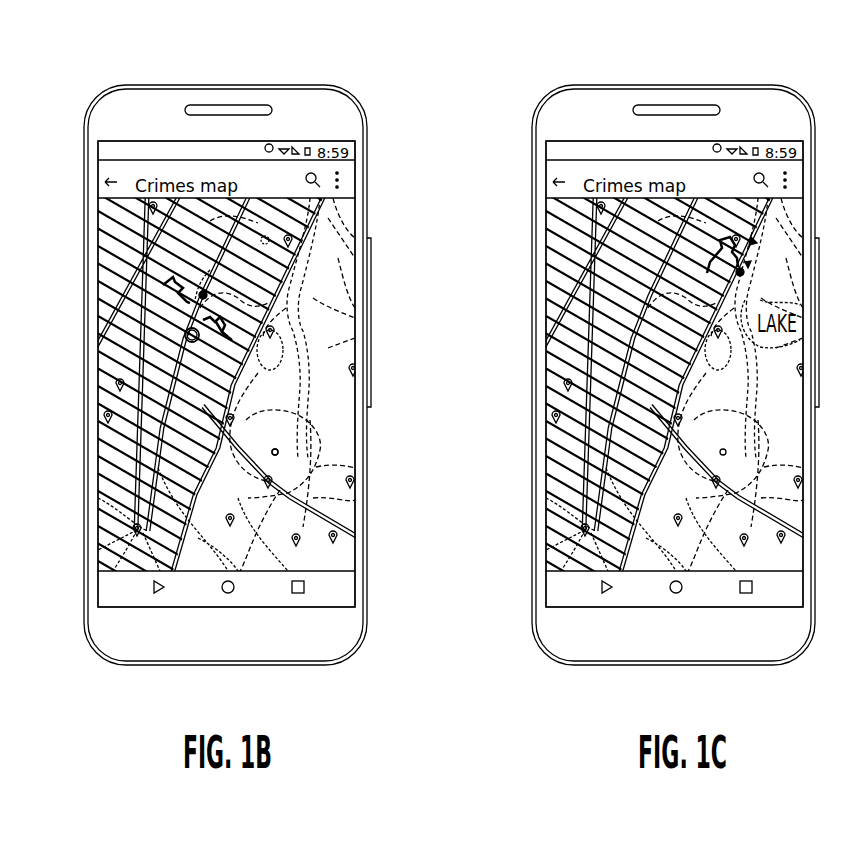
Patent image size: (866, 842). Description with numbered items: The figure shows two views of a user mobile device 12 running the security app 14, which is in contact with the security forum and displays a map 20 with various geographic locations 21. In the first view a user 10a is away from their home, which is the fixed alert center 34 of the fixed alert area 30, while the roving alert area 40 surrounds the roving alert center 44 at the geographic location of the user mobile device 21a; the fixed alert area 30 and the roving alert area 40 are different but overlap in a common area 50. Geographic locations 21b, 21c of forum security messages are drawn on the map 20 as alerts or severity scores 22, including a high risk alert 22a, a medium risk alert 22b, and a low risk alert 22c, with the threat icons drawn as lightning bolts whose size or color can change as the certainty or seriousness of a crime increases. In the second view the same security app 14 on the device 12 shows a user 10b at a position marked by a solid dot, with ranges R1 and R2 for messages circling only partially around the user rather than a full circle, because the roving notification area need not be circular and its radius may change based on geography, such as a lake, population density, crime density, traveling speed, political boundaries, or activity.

In FIG. 1B, the user 10a is at (335, 390).
In FIG. 1B, the user 10b is at (268, 241).
In FIG. 1B, the user mobile device 12 is at (277, 85).
In FIG. 1C, the user mobile device 12 is at (762, 85).
In FIG. 1B, the security app 14 is at (383, 212).
In FIG. 1C, the security app 14 is at (803, 318).
In FIG. 1B, the map 20 is at (186, 165).
In FIG. 1C, the map 20 is at (551, 232).
In FIG. 1B, the geographic locations 21 is at (335, 390).
In FIG. 1B, the geographic location of user mobile device 21a is at (193, 343).
In FIG. 1B, the geographic location 21b is at (351, 330).
In FIG. 1C, the geographic location 21b is at (592, 248).
In FIG. 1B, the geographic location of forum security message 21c is at (228, 338).
In FIG. 1C, the geographic location of forum security message 21c is at (592, 248).
In FIG. 1C, the severity score 22 is at (718, 241).
In FIG. 1B, the high risk alert 22a is at (163, 285).
In FIG. 1B, the medium risk alert 22b is at (232, 340).
In FIG. 1B, the low risk alert 22c is at (351, 330).
In FIG. 1B, the fixed alert area 30 is at (210, 270).
In FIG. 1B, the fixed alert center 34 is at (200, 290).
In FIG. 1B, the roving alert area 40 is at (274, 437).
In FIG. 1B, the roving alert center 44 is at (186, 342).
In FIG. 1B, the common area 50 is at (172, 333).
In FIG. 1C, the first radius R1 is at (744, 262).
In FIG. 1C, the second radius R2 is at (759, 294).